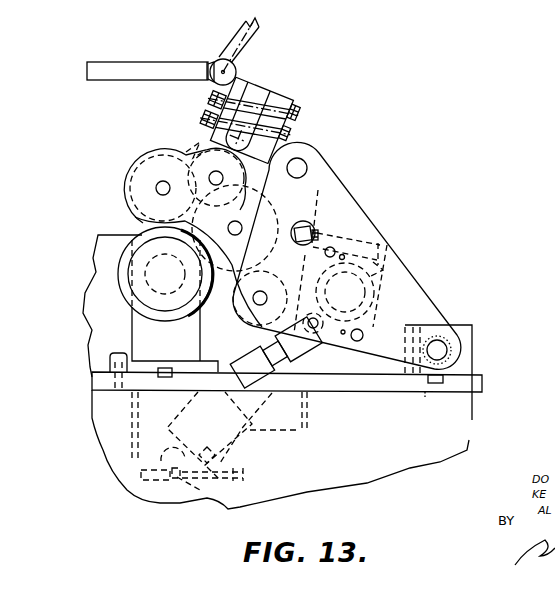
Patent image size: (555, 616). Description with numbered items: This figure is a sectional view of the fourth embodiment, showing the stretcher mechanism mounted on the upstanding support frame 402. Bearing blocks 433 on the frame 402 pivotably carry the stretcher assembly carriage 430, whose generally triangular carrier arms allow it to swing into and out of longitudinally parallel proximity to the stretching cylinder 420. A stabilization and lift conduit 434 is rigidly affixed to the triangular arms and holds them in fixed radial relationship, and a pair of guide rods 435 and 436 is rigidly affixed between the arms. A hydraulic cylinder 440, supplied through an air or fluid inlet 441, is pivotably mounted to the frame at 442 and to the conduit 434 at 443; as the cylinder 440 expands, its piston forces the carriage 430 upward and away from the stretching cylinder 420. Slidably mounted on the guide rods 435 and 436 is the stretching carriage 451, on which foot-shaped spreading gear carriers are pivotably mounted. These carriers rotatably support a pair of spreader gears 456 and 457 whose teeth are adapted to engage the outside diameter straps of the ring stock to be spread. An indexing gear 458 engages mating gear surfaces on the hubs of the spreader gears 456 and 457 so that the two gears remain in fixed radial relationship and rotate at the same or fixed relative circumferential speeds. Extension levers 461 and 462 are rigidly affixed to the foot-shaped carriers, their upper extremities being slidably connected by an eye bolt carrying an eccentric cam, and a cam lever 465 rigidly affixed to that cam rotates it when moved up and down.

The support frame 402 is at (98, 397).
The stretching cylinder 420 is at (120, 281).
The stretcher assembly carriage 430 is at (380, 217).
The bearing blocks 433 is at (460, 330).
The stabilization and lift conduit 434 is at (398, 266).
The guide rod 435 is at (295, 158).
The guide rod 436 is at (258, 302).
The hydraulic cylinder 440 is at (323, 427).
The air or fluid inlet 441 is at (257, 467).
The pivot mounting of hydraulic cylinder to frame 442 is at (216, 505).
The pivot mounting of hydraulic cylinder to conduit 443 is at (318, 353).
The stretching carriage 451 is at (323, 158).
The spreader gear 456 is at (140, 222).
The spreader gear 457 is at (207, 237).
The indexing gear 458 is at (200, 153).
The extension lever 461 is at (247, 74).
The extension lever 462 is at (286, 96).
The cam lever 465 is at (170, 48).